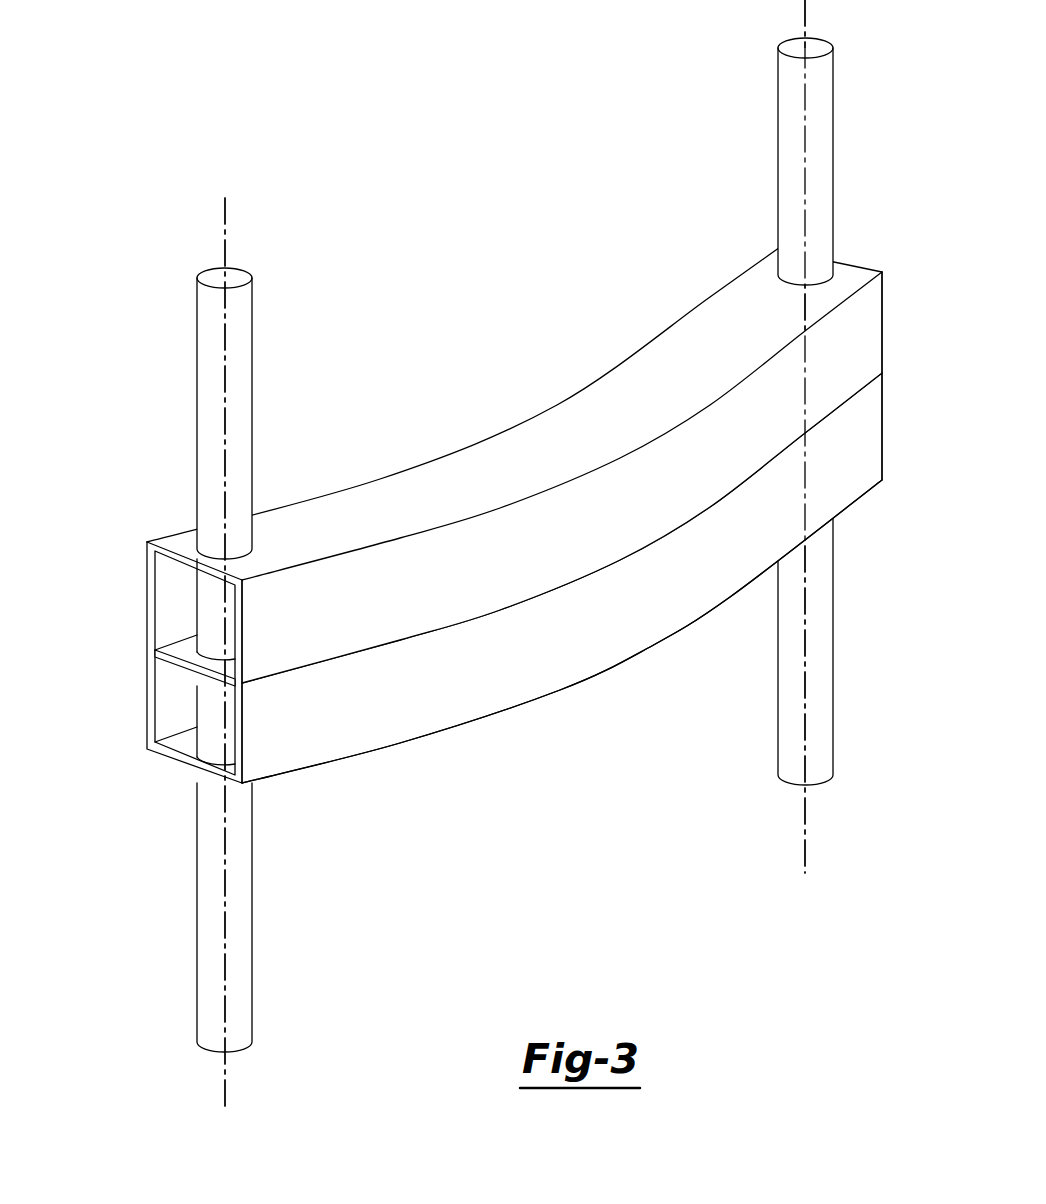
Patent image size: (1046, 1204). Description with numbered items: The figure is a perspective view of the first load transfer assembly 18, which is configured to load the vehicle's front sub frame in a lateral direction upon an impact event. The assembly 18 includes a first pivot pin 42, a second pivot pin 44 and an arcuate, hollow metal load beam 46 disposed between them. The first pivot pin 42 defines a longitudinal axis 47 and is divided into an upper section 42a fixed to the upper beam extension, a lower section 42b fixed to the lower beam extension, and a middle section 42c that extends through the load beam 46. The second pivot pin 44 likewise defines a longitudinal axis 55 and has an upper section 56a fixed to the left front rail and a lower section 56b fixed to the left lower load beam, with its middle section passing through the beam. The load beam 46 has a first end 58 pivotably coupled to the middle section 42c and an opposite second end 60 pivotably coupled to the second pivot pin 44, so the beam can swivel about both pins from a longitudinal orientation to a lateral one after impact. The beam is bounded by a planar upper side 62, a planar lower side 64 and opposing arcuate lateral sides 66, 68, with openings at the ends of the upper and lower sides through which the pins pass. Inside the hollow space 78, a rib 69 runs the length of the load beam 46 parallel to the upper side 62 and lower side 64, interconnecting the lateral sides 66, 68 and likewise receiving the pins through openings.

The first load transfer assembly 18 is at (417, 888).
The first pivot pin 42 is at (214, 648).
The upper section 42a is at (207, 388).
The lower section 42b is at (245, 897).
The middle section 42c is at (208, 720).
The second pivot pin 44 is at (867, 436).
The load beam 46 is at (509, 534).
The longitudinal axis 47 is at (225, 222).
The longitudinal axis 55 is at (805, 822).
The upper section 56a is at (785, 105).
The lower section 56b is at (822, 668).
The first end 58 is at (148, 625).
The second end 60 is at (858, 330).
The planar upper side 62 is at (561, 442).
The planar lower side 64 is at (460, 727).
The arcuate lateral side 66 is at (148, 697).
The arcuate lateral side 68 is at (642, 632).
The rib 69 is at (185, 665).
The space 78 is at (188, 582).